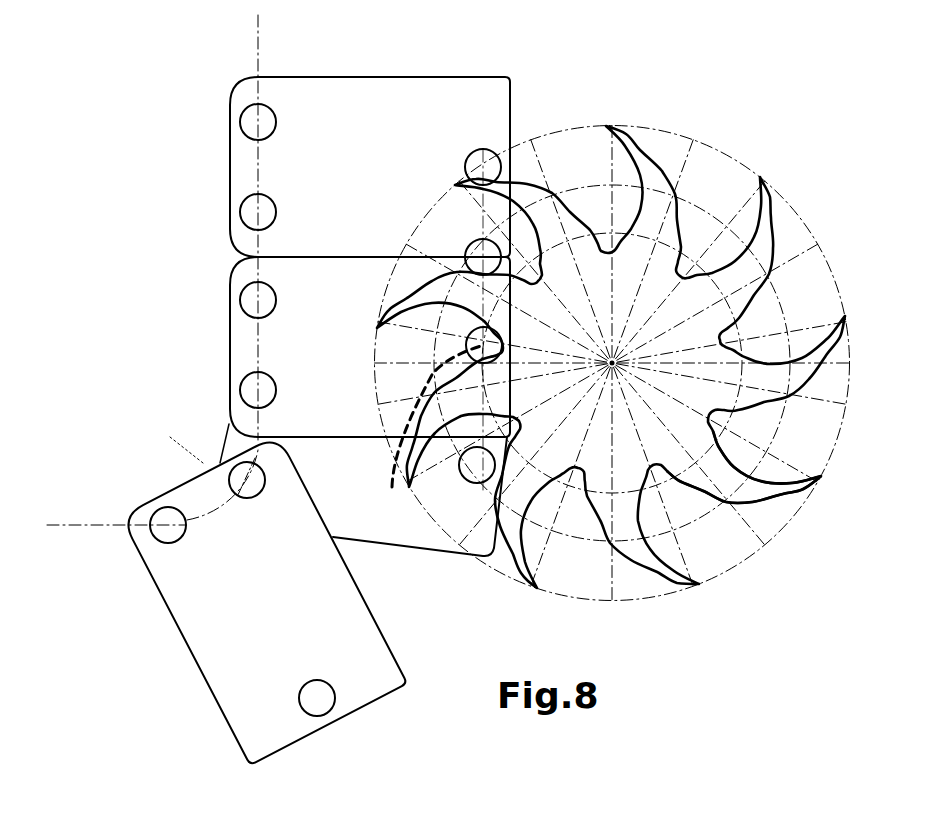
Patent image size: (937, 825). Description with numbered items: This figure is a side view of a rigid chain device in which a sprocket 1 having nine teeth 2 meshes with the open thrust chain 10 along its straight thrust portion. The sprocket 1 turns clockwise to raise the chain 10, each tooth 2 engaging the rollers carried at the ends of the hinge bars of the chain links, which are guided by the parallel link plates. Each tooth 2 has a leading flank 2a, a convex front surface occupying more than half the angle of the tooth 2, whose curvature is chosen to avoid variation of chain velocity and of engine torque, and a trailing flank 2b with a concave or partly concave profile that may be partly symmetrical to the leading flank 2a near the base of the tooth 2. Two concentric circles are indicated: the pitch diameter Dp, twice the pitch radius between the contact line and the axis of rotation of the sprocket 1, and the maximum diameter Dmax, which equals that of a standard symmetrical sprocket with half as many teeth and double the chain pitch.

The sprocket 1 is at (776, 227).
The tooth 2 is at (726, 487).
The leading flank 2a is at (757, 500).
The trailing flank 2b is at (776, 480).
The chain 10 is at (518, 70).
The maximum diameter Dmax is at (758, 112).
The pitch diameter Dp is at (689, 255).